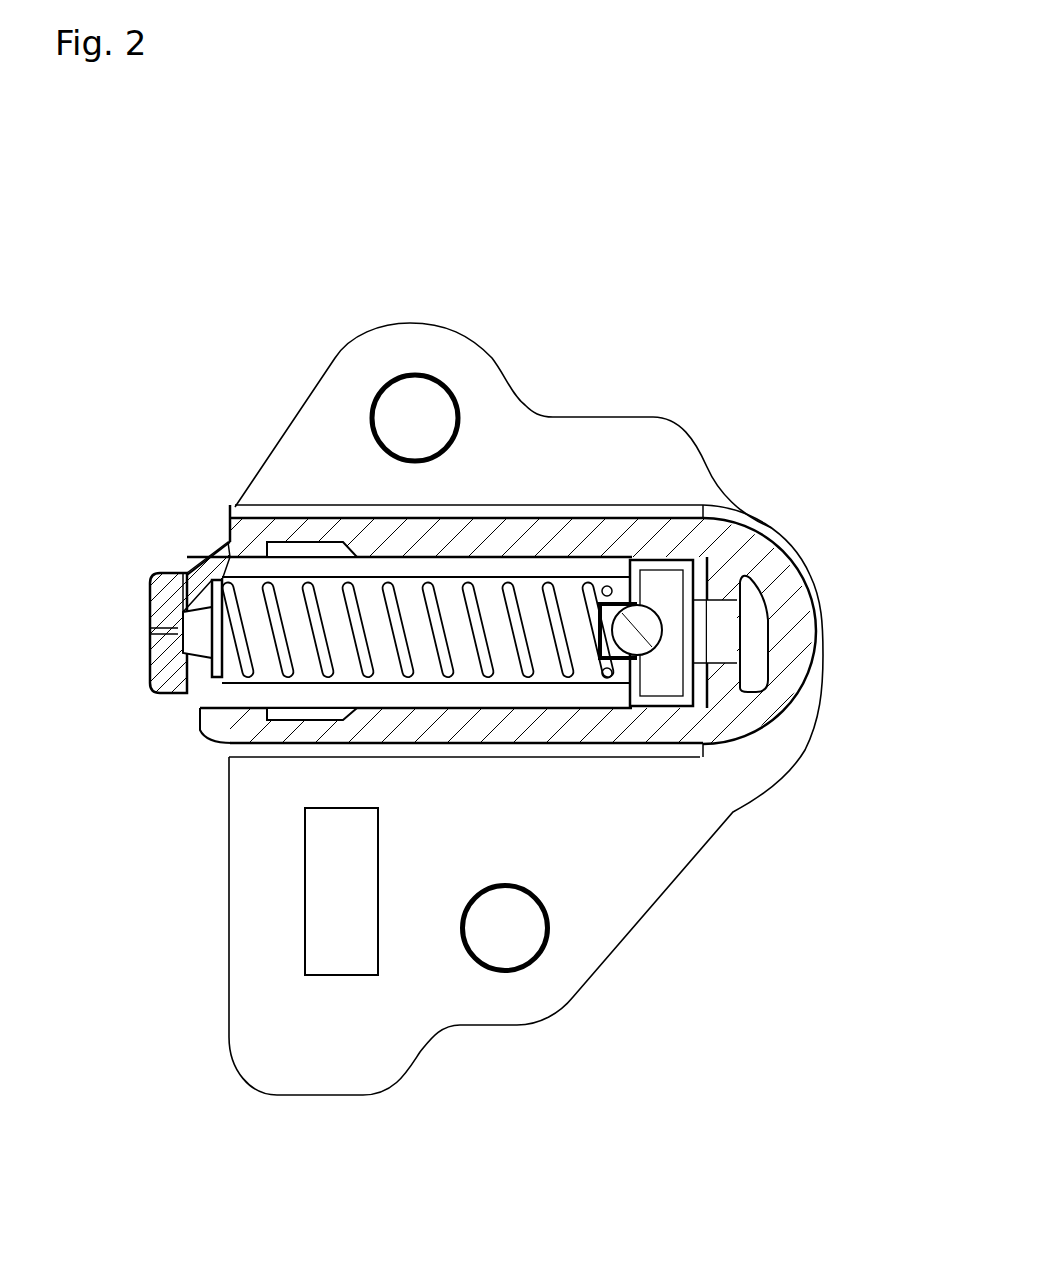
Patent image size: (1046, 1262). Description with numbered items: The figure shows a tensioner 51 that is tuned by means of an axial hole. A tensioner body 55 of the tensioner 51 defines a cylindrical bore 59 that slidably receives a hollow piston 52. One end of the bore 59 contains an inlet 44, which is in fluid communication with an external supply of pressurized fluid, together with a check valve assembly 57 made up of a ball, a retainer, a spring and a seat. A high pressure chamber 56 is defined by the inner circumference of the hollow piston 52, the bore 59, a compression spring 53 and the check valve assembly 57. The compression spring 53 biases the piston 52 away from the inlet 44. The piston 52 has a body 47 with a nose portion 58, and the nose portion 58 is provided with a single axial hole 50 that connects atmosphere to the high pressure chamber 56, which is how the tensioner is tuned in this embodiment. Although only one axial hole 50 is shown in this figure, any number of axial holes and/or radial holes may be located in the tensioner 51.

The tensioner 51 is at (720, 215).
The tensioner body 55 is at (653, 443).
The cylindrical bore 59 is at (567, 557).
The inlet 44 is at (722, 632).
The high pressure chamber 56 is at (330, 583).
The body 47 is at (257, 570).
The hollow piston 52 is at (340, 697).
The nose portion 58 is at (165, 632).
The axial hole 50 is at (165, 632).
The compression spring 53 is at (470, 590).
The check valve assembly 57 is at (690, 704).